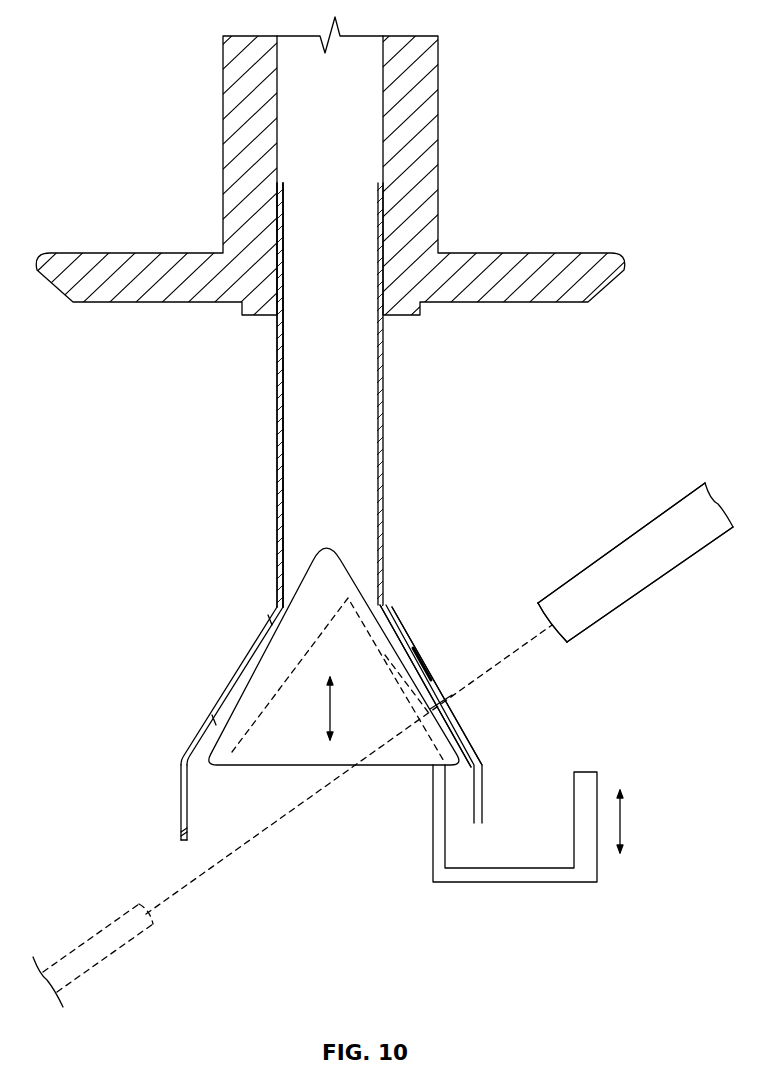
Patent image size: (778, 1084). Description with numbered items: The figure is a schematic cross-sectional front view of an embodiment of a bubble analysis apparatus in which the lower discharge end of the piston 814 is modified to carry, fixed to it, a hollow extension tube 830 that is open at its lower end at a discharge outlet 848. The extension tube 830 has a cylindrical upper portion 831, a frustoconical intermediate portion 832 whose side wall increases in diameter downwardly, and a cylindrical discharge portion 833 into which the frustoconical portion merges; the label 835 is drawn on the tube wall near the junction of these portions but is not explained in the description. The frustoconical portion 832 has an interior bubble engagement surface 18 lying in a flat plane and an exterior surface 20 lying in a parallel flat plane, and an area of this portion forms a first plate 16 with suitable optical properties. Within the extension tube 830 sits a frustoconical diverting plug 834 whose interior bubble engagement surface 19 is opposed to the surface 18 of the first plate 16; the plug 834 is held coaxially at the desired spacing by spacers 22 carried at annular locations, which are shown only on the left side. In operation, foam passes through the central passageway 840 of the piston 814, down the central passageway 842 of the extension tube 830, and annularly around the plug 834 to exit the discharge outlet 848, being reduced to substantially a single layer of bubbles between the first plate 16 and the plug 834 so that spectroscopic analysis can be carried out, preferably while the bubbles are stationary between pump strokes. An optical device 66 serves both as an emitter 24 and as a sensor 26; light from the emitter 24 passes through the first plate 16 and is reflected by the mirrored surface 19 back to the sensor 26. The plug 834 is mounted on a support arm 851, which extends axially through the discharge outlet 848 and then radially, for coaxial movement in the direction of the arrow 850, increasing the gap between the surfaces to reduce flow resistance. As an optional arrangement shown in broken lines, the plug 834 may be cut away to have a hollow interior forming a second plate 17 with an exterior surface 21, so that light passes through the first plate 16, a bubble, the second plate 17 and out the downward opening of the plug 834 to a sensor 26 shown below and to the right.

The piston 814 is at (415, 167).
The central passageway 840 is at (358, 117).
The extension tube 830 is at (391, 447).
The central passageway 842 is at (358, 402).
The cylindrical upper portion 831 is at (278, 505).
The frustoconical intermediate portion 832 is at (237, 680).
The spacers 22 is at (275, 622).
The discharge portion 833 is at (180, 788).
The discharge outlet 848 is at (180, 840).
The diverting plug 834 is at (330, 579).
The second plate 17 is at (383, 647).
The exterior surface 21 is at (398, 683).
The arrow 850 is at (325, 717).
The right wall portion 835 is at (372, 598).
The interior bubble engagement surface 19 is at (392, 622).
The exterior surface 20 is at (406, 643).
The interior bubble engagement surface 18 is at (430, 668).
The first plate 16 is at (452, 692).
The support arm 851 is at (515, 873).
The sensor 26 is at (92, 953).
The optical device 66 is at (680, 517).
The emitter 24 is at (563, 605).